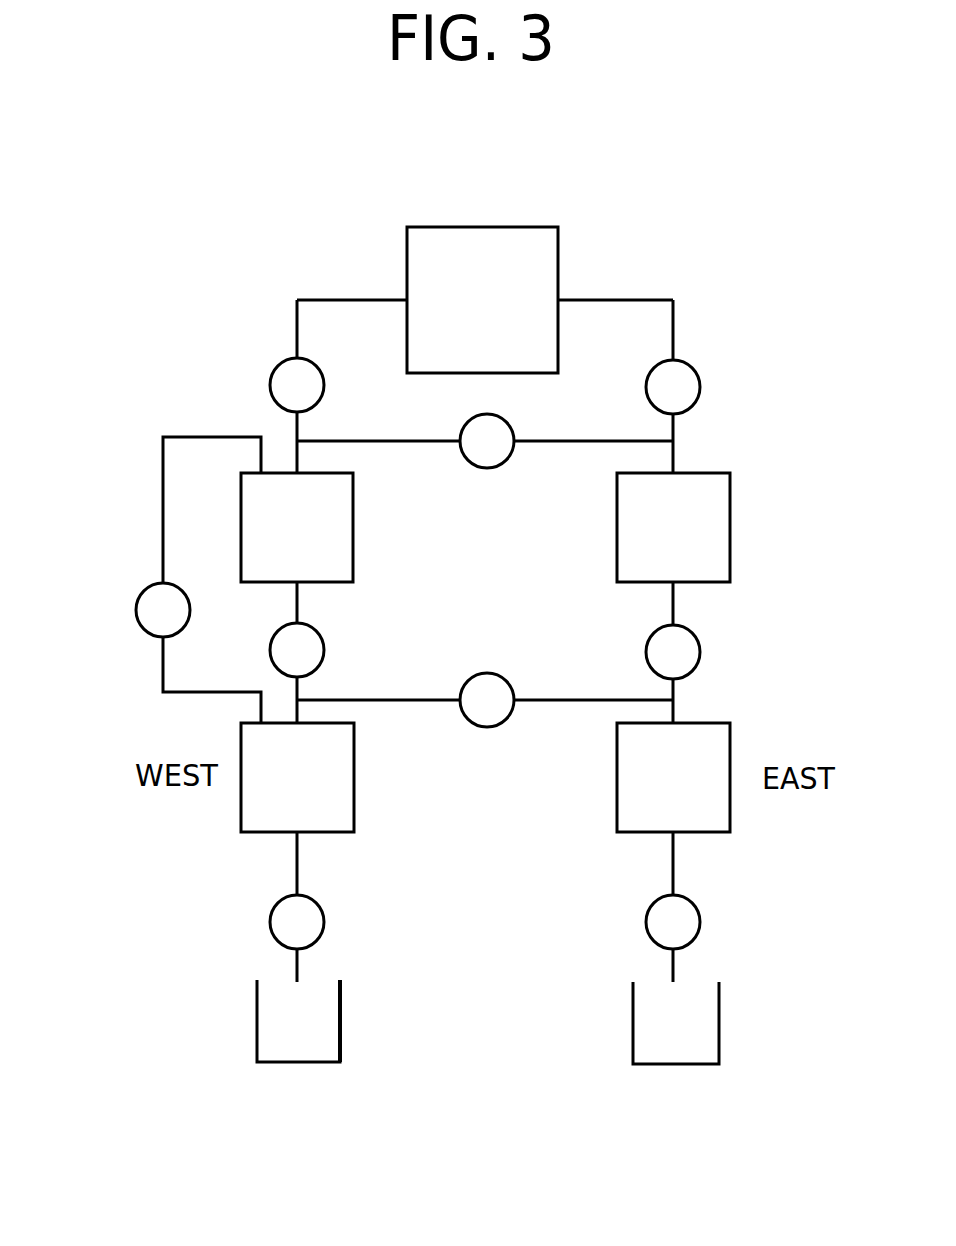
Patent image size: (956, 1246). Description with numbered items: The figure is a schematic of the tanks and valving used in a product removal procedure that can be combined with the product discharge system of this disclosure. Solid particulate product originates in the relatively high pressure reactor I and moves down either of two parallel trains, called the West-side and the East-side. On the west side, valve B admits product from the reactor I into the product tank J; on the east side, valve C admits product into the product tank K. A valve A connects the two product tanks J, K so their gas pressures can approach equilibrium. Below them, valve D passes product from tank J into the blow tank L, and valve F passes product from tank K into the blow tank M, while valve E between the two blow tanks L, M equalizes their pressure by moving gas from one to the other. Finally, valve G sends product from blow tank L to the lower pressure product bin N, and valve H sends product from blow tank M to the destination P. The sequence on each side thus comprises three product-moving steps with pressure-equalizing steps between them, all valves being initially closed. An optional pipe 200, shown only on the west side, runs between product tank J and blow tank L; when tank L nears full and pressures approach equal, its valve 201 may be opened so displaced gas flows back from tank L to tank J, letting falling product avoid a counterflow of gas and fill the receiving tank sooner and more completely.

The reactor I is at (471, 318).
The product tank J is at (311, 544).
The product tank K is at (688, 544).
The blow tank L is at (311, 794).
The blow tank M is at (690, 794).
The valve A is at (508, 424).
The valve B is at (323, 388).
The valve C is at (699, 388).
The valve D is at (320, 637).
The valve E is at (508, 683).
The valve F is at (697, 640).
The valve G is at (320, 908).
The valve H is at (697, 908).
The product bin N is at (341, 1030).
The destination P is at (632, 1022).
The pipe 200 is at (161, 531).
The valve 201 is at (152, 638).